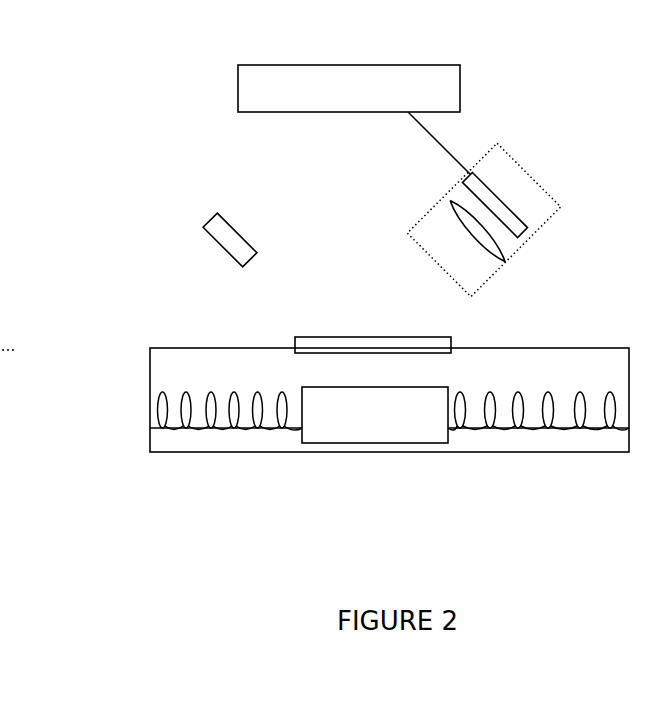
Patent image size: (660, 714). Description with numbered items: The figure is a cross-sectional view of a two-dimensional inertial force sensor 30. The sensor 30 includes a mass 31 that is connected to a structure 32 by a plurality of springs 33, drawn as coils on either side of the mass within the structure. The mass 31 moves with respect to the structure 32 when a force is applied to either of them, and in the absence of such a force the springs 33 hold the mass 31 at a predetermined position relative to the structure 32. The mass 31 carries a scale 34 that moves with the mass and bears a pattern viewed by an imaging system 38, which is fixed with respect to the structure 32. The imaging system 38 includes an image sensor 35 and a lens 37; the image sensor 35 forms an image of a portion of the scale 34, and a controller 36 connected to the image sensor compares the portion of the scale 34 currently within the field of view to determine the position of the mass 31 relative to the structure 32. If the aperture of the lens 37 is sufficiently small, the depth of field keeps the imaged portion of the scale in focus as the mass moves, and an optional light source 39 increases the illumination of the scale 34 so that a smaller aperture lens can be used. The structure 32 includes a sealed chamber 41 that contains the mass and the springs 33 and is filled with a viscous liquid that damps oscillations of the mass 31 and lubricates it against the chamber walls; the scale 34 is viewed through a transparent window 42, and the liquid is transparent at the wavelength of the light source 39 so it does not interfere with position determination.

The sensor 30 is at (94, 227).
The mass 31 is at (325, 430).
The structure 32 is at (157, 347).
The springs 33 is at (198, 428).
The scale 34 is at (412, 387).
The image sensor 35 is at (520, 215).
The controller 36 is at (317, 68).
The lens 37 is at (496, 245).
The imaging system 38 is at (515, 165).
The light source 39 is at (238, 232).
The sealed chamber 41 is at (603, 360).
The transparent window 42 is at (370, 343).